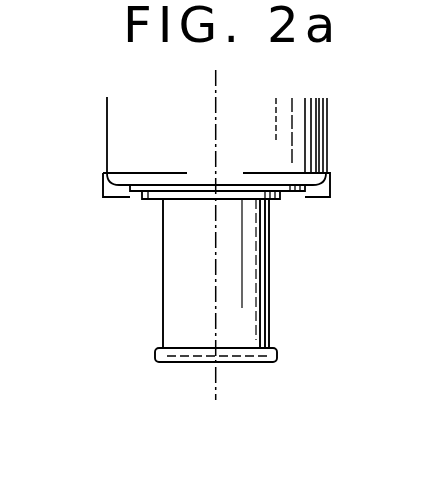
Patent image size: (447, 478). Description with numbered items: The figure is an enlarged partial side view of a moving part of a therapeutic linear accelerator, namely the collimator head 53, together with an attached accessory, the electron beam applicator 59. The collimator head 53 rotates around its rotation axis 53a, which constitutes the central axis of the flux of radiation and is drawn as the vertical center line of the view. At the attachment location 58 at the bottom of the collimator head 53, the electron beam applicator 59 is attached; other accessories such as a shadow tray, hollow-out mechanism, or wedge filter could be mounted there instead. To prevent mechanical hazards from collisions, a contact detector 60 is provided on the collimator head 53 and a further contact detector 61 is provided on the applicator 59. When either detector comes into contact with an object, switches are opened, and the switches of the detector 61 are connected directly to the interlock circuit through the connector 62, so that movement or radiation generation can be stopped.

The collimator head 53 is at (107, 133).
The rotation axis of the collimator head 53a is at (217, 375).
The attachment location 58 is at (289, 199).
The electron beam applicator 59 is at (163, 297).
The contact detector 60 is at (103, 188).
The contact detector 61 is at (155, 352).
The connector 62 is at (148, 199).